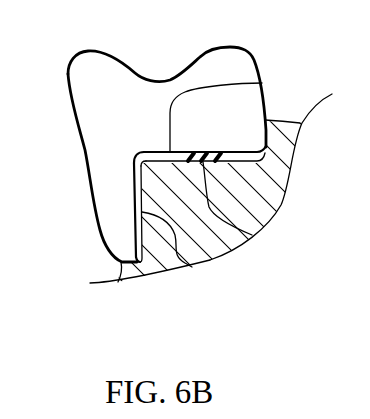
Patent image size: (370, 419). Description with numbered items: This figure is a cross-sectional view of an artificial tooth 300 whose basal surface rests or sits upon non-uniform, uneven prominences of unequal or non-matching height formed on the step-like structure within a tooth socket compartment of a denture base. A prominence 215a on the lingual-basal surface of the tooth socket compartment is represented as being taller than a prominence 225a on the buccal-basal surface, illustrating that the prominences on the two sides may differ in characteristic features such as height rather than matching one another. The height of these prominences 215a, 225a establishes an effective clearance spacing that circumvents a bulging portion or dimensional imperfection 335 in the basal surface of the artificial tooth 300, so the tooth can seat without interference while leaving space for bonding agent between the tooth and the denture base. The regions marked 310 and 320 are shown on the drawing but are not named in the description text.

The artificial tooth 300 is at (256, 58).
The inner lining of crown 310 is at (262, 83).
The bulging portion or dimensional imperfection 335 is at (136, 158).
The lining wall 320 is at (133, 193).
The prominence on the lingual-basal surface 215a is at (252, 235).
The prominence on the buccal-basal surface 225a is at (190, 263).